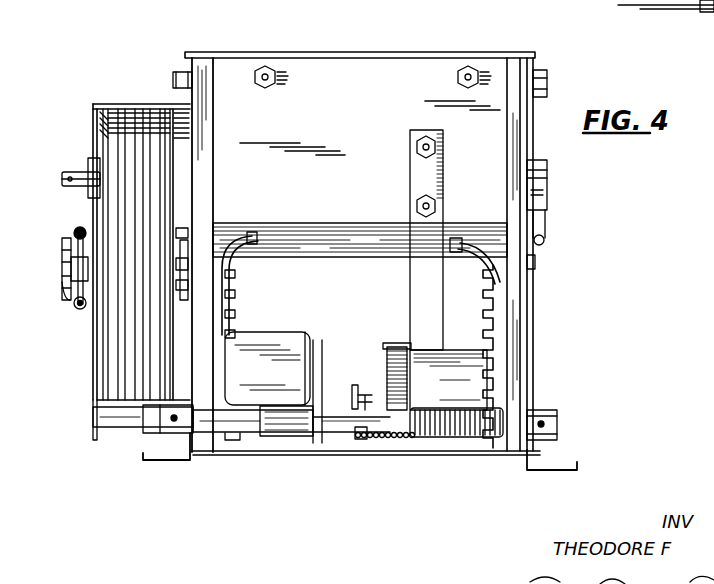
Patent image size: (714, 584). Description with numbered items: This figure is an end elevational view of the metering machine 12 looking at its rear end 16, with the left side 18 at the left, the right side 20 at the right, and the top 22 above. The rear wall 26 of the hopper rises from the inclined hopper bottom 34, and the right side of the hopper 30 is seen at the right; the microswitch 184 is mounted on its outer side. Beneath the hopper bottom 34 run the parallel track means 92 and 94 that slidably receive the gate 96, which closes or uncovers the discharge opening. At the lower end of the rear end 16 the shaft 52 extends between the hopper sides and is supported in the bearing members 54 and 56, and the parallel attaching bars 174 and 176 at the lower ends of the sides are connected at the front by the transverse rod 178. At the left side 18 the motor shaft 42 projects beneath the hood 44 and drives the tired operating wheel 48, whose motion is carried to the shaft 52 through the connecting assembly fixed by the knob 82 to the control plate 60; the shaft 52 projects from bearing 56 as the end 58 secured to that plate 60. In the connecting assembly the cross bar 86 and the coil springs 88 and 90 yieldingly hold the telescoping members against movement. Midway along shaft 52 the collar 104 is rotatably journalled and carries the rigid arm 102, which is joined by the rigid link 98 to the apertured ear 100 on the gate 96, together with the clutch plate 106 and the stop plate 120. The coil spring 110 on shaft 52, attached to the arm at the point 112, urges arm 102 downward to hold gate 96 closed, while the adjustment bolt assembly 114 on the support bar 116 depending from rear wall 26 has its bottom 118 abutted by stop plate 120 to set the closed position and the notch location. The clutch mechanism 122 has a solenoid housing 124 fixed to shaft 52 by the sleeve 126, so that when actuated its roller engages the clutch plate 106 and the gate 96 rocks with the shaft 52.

The metering machine 12 is at (158, 82).
The rear end 16 is at (402, 80).
The left side 18 is at (86, 135).
The right side 20 is at (535, 327).
The top 22 is at (352, 51).
The rear wall 26 is at (352, 130).
The right side of hopper 30 is at (528, 262).
The hopper bottom 34 is at (338, 299).
The motor shaft 42 is at (72, 172).
The hood 44 is at (92, 108).
The operating wheel 48 is at (128, 105).
The shaft 52 is at (250, 440).
The bearing member 54 is at (547, 410).
The bearing member 56 is at (165, 435).
The projecting shaft end 58 is at (118, 428).
The control plate 60 is at (93, 378).
The knob 82 is at (66, 240).
The cross bar 86 is at (60, 290).
The coil spring 88 is at (79, 228).
The coil spring 90 is at (80, 310).
The track means 92 is at (234, 290).
The track means 94 is at (484, 296).
The gate 96 is at (452, 396).
The rigid link 98 is at (352, 400).
The apertured ear 100 is at (352, 395).
The rigid arm 102 is at (345, 438).
The collar 104 is at (332, 440).
The clutch plate 106 is at (376, 344).
The coil spring 110 is at (458, 440).
The spring attachment 112 is at (390, 355).
The adjustment bolt assembly 114 is at (382, 270).
The support bar 116 is at (408, 192).
The bottom of bolt assembly 118 is at (405, 440).
The stop plate 120 is at (368, 440).
The clutch mechanism 122 is at (272, 330).
The solenoid housing 124 is at (298, 334).
The sleeve 126 is at (290, 440).
The attaching bar 174 is at (157, 463).
The attaching bar 176 is at (543, 471).
The transverse rod 178 is at (636, 9).
The microswitch 184 is at (548, 186).